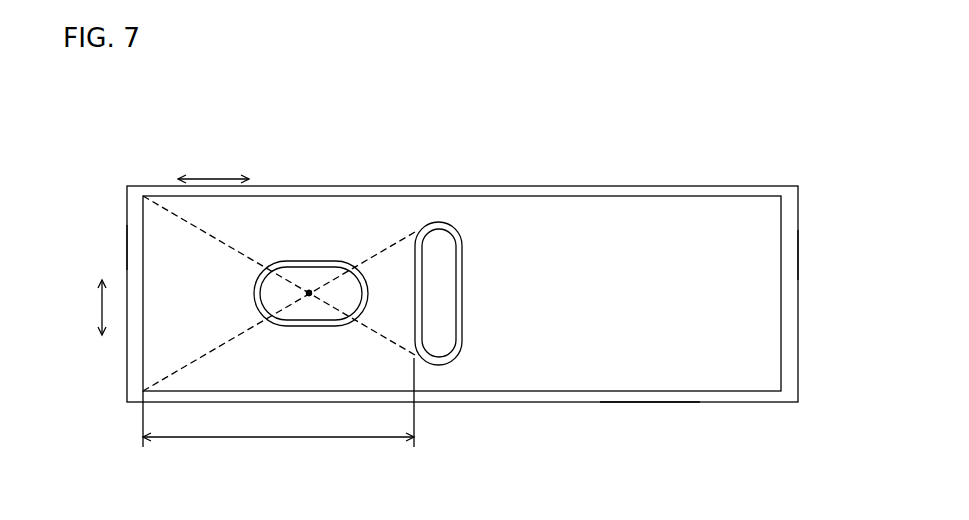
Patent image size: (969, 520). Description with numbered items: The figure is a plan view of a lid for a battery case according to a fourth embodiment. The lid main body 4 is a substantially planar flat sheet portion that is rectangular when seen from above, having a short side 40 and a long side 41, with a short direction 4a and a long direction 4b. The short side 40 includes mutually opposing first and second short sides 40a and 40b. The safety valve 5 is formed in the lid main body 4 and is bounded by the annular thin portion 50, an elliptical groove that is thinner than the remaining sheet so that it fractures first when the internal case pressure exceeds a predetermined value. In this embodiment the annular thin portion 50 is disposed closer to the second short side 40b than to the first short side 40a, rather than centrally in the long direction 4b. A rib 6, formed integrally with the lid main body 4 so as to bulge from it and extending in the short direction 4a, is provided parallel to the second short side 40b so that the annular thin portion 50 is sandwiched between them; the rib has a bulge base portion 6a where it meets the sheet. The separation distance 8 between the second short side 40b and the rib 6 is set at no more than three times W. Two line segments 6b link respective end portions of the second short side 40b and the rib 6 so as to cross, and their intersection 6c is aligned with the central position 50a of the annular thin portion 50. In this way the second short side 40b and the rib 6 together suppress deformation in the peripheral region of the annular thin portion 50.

The lid main body 4 is at (648, 373).
The short direction 4a is at (102, 303).
The long direction 4b is at (205, 179).
The safety valve 5 is at (332, 329).
The annular thin portion 50 is at (300, 327).
The central position 50a is at (309, 293).
The rib 6 is at (450, 223).
The bulge base portion 6a is at (451, 346).
The line segments 6b is at (205, 233).
The intersection 6c is at (309, 291).
The separation distance 8 is at (258, 438).
The short side 40 is at (800, 225).
The first short side 40a is at (800, 252).
The second short side 40b is at (142, 247).
The long side 41 is at (703, 194).